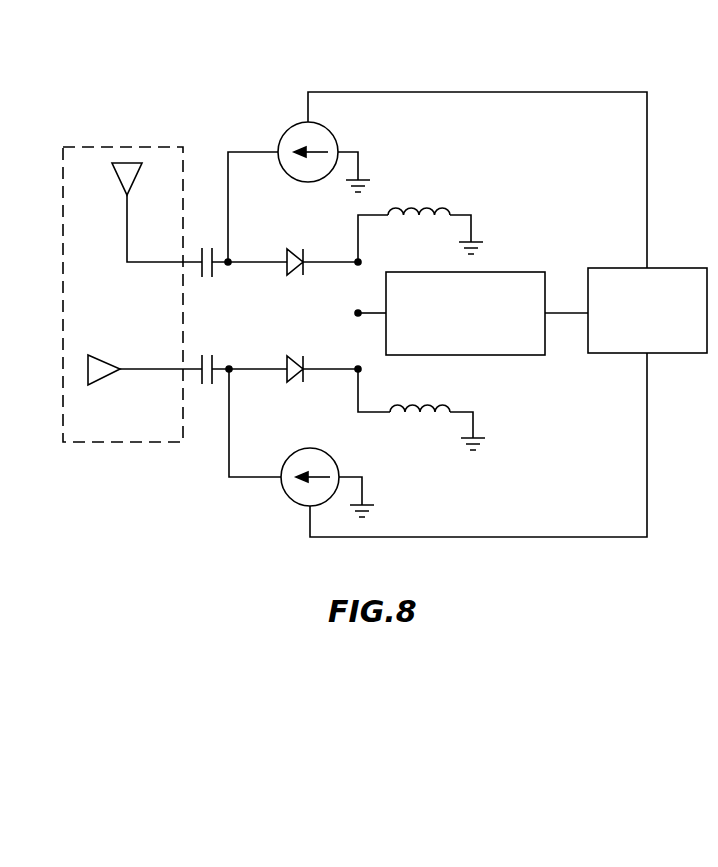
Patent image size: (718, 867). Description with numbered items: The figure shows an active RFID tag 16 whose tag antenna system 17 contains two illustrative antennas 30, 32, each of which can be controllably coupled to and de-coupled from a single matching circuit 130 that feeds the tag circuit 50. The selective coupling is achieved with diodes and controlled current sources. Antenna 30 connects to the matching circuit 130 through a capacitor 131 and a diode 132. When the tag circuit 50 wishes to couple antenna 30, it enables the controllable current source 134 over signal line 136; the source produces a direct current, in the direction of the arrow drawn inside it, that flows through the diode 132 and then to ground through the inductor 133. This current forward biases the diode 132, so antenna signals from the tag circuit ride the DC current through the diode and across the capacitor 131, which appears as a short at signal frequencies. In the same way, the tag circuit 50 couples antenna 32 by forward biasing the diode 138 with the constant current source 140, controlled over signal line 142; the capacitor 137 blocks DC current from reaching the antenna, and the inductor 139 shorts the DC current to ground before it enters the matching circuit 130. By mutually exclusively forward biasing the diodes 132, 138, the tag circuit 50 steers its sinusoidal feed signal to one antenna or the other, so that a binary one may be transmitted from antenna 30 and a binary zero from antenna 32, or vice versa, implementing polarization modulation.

The active RFID tag 16 is at (253, 83).
The tag antenna system 17 is at (123, 147).
The antenna 30 is at (124, 215).
The antenna 32 is at (140, 367).
The tag circuit 50 is at (658, 268).
The matching circuit 130 is at (498, 272).
The capacitor 131 is at (216, 252).
The diode 132 is at (297, 272).
The inductor 133 is at (442, 208).
The current source 134 is at (332, 130).
The signal line 136 is at (562, 90).
The capacitor 137 is at (218, 379).
The diode 138 is at (300, 354).
The inductor 139 is at (450, 404).
The constant current source 140 is at (288, 500).
The signal line 142 is at (492, 538).